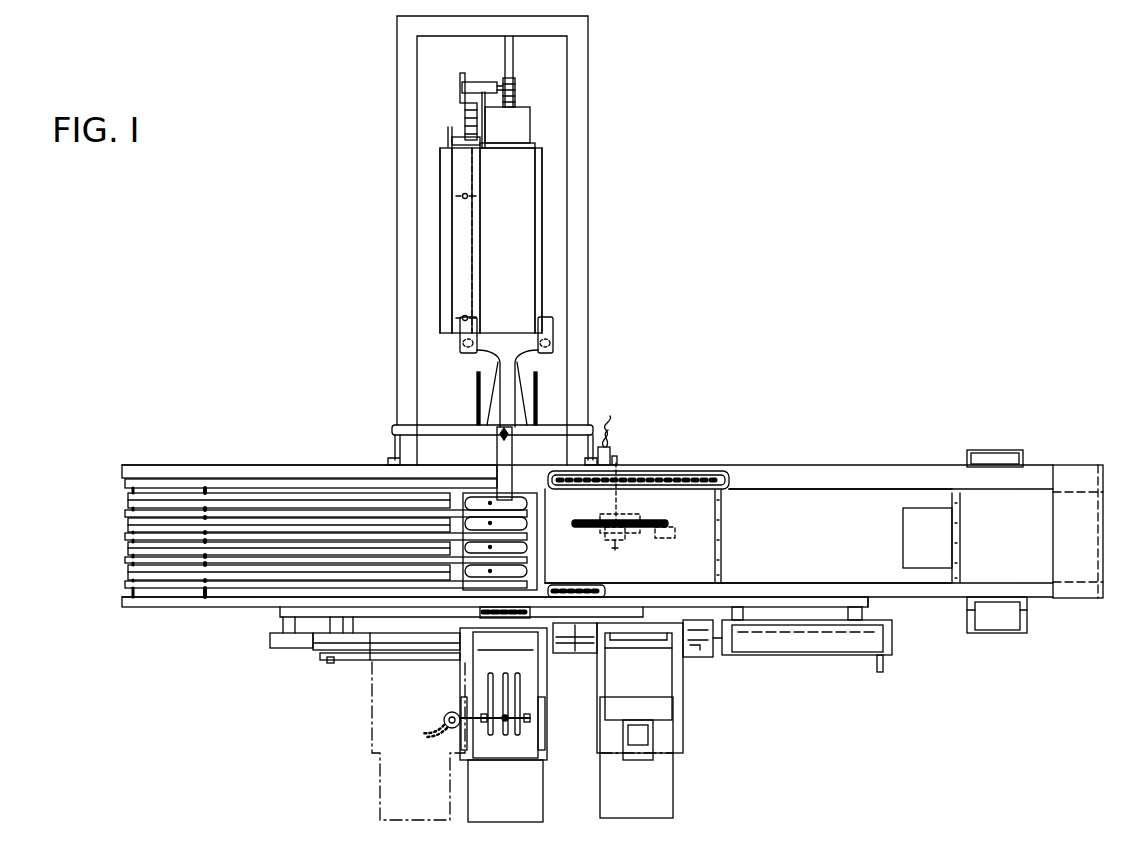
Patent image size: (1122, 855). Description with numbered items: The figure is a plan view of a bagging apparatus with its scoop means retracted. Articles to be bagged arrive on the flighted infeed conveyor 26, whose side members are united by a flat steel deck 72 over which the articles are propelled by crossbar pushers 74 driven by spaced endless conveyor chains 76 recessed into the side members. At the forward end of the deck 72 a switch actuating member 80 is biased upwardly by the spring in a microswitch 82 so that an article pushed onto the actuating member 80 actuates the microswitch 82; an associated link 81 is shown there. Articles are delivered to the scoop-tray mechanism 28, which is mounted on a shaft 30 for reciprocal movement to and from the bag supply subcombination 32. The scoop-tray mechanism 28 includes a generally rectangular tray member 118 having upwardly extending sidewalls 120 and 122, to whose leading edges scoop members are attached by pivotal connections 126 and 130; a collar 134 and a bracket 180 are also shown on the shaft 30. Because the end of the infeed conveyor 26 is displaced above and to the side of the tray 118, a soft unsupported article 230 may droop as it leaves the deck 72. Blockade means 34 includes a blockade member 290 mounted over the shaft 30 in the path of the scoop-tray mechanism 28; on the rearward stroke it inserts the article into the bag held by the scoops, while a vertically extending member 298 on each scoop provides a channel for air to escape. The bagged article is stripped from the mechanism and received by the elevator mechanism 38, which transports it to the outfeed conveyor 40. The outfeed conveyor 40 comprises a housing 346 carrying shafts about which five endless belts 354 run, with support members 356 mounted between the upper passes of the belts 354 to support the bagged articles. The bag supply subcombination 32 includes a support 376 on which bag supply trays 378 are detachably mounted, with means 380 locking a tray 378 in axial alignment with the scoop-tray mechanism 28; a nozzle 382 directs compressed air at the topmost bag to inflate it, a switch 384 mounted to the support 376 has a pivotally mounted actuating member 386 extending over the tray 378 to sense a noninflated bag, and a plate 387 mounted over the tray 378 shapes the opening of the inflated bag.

The flighted infeed conveyor 26 is at (870, 458).
The scoop-tray mechanism 28 is at (422, 335).
The shaft 30 is at (514, 60).
The bag supply subcombination 32 is at (696, 699).
The blockade means 34 is at (482, 455).
The elevator mechanism 38 is at (541, 544).
The outfeed conveyor 40 is at (258, 600).
The flat steel deck 72 is at (760, 500).
The crossbar pushers 74 is at (722, 542).
The endless conveyor chains 76 is at (688, 474).
The switch actuating member 80 is at (655, 520).
The link 81 is at (614, 500).
The microswitch 82 is at (612, 447).
The tray member 118 is at (521, 210).
The sidewall 120 is at (462, 203).
The sidewall 122 is at (538, 287).
The pivotal connection 126 is at (460, 349).
The pivotal connection 130 is at (554, 347).
The collar 134 is at (516, 88).
The actuator bracket 180 is at (462, 82).
The unsupported article 230 is at (915, 517).
The blockade member 290 is at (519, 485).
The vertically extending member 298 is at (477, 388).
The housing 346 is at (165, 466).
The endless belts 354 is at (240, 492).
The support members 356 is at (125, 483).
The support 376 is at (323, 660).
The bag supply trays 378 is at (598, 752).
The locking means 380 is at (588, 625).
The nozzle 382 is at (484, 607).
The switch 384 is at (448, 717).
The actuating member 386 is at (510, 725).
The plate 387 is at (520, 760).